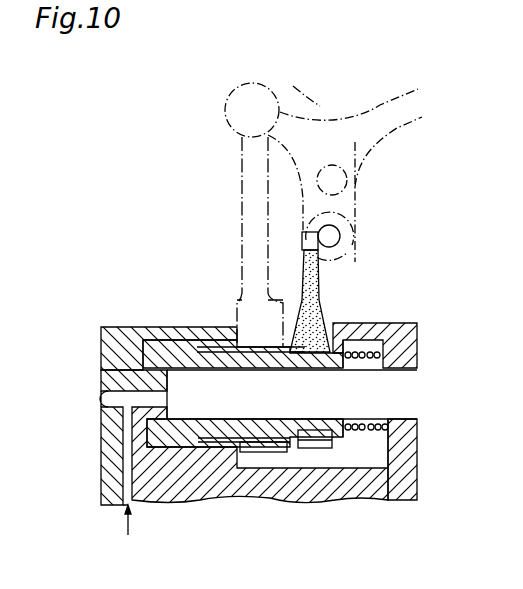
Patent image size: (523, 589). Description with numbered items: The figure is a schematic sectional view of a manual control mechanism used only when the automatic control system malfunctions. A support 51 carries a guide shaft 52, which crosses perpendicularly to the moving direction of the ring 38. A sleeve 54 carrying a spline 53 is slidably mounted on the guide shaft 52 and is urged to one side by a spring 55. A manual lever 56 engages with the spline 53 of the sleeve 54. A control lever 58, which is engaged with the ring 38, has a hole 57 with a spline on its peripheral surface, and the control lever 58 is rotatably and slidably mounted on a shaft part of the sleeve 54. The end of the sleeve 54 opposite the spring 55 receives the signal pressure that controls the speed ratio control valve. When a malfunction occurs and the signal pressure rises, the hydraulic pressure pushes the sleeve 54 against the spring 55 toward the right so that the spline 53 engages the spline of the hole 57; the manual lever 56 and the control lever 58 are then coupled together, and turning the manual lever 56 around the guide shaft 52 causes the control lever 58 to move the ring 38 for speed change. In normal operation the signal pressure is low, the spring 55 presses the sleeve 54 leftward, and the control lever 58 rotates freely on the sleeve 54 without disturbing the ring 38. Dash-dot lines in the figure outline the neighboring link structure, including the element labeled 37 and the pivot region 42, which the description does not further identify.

The link arm 37 is at (395, 92).
The ring 38 is at (397, 128).
The pivot pin 42 is at (339, 195).
The support 51 is at (413, 441).
The guide shaft 52 is at (428, 392).
The spline 53 is at (270, 455).
The sleeve 54 is at (163, 324).
The spring 55 is at (385, 348).
The manual lever 56 is at (240, 178).
The hole 57 is at (343, 345).
The control lever 58 is at (318, 280).